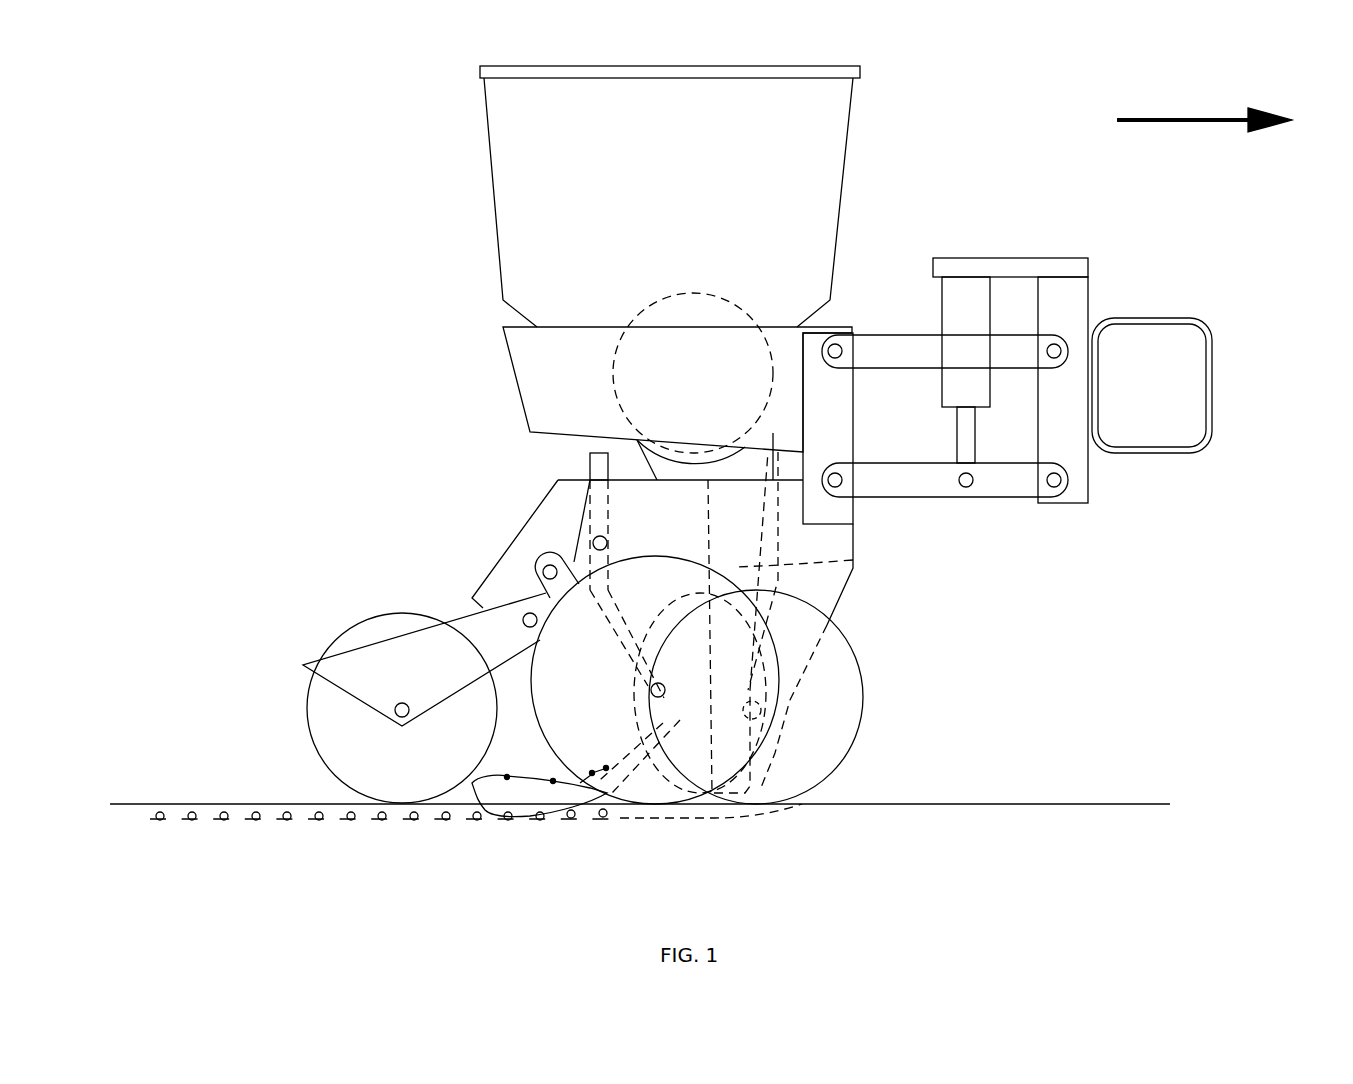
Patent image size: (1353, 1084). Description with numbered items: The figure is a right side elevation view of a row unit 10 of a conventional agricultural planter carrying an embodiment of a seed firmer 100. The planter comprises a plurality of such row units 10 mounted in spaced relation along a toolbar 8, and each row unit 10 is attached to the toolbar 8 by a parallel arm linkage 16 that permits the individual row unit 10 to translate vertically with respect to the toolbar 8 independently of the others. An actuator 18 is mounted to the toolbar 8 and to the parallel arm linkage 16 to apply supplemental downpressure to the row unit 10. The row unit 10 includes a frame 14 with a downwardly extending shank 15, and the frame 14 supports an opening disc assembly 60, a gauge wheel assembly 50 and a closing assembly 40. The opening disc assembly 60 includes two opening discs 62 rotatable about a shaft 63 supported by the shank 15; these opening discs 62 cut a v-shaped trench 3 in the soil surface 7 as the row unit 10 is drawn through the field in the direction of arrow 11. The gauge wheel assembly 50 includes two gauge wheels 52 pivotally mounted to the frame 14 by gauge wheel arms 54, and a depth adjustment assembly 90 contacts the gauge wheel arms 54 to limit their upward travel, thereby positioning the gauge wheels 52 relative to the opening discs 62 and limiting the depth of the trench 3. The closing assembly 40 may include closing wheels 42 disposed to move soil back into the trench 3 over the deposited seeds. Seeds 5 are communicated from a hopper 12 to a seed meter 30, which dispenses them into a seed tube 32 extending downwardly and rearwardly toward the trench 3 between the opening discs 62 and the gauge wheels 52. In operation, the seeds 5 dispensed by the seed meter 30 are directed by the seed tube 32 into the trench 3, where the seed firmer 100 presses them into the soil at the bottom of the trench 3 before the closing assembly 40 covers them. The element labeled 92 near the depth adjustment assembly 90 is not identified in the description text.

The row unit 10 is at (969, 151).
The arrow 11 is at (1203, 118).
The hopper 12 is at (682, 199).
The seed meter 30 is at (614, 404).
The depth adjustment assembly 90 is at (540, 497).
The pivot pin 92 is at (553, 510).
The frame 14 is at (530, 513).
The gauge wheel arms 54 is at (537, 578).
The closing assembly 40 is at (295, 623).
The closing wheels 42 is at (333, 737).
The gauge wheel assembly 50 is at (578, 744).
The gauge wheels 52 is at (591, 719).
The opening disc assembly 60 is at (867, 697).
The opening discs 62 is at (823, 756).
The shaft 63 is at (760, 705).
The shank 15 is at (840, 597).
The seed tube 32 is at (853, 560).
The parallel arm linkage 16 is at (1013, 501).
The actuator 18 is at (979, 314).
The toolbar 8 is at (1170, 318).
The seed firmer 100 is at (490, 820).
The soil surface 7 is at (1060, 804).
The trench 3 is at (652, 810).
The seeds 5 is at (443, 835).